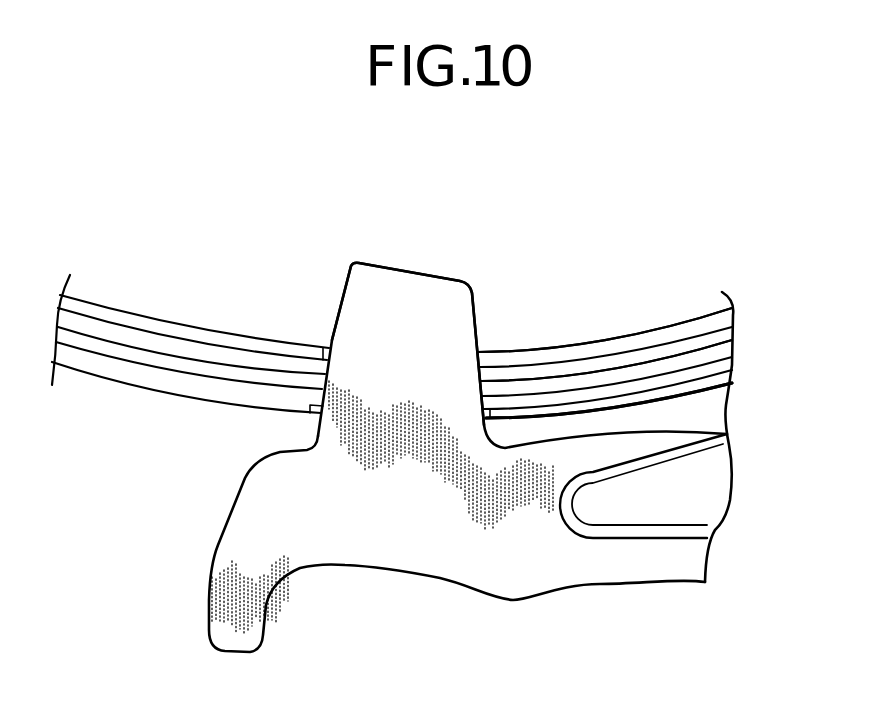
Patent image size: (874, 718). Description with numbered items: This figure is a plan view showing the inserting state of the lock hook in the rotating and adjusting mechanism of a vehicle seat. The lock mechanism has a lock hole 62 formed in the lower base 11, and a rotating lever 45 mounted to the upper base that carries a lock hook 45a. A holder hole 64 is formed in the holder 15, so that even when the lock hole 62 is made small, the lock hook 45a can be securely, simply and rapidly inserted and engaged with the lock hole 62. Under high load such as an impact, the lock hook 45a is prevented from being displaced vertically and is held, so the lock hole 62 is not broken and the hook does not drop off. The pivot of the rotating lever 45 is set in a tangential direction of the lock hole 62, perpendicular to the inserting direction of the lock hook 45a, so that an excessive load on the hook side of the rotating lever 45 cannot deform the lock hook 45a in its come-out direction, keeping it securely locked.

The lower base 11 is at (692, 357).
The holder 15 is at (630, 333).
The rotating lever 45 is at (473, 553).
The lock hook 45a is at (412, 285).
The lock hole 62 is at (327, 385).
The holder hole 64 is at (483, 413).